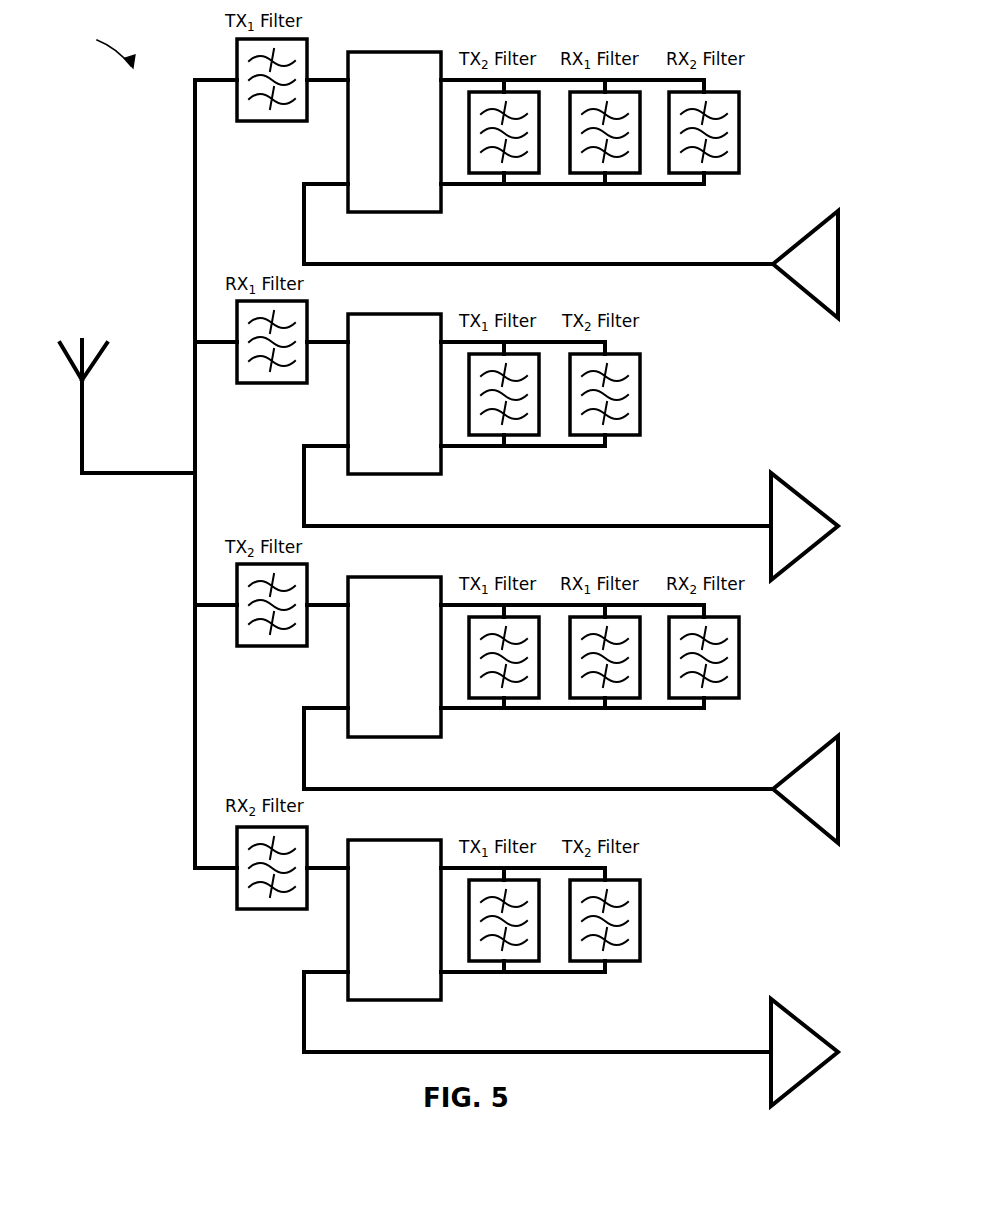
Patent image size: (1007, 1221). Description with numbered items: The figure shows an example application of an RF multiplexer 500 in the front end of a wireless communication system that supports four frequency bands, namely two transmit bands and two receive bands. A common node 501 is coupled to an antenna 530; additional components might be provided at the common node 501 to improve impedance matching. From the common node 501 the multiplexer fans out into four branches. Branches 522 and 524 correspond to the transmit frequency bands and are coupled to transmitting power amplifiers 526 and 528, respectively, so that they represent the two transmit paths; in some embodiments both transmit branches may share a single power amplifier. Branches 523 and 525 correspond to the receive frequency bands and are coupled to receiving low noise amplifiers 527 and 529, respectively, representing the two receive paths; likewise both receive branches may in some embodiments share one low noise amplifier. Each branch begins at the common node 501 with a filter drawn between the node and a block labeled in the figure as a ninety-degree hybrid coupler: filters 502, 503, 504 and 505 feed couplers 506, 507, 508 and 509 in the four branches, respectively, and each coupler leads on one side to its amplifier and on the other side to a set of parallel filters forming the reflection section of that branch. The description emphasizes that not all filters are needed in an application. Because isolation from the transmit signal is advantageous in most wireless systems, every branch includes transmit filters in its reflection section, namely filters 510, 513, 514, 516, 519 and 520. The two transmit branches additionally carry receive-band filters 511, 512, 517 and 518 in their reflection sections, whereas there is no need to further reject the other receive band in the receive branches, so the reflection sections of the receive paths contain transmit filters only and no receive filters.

The RF multiplexer 500 is at (92, 39).
The common node 501 is at (137, 478).
The TX1 filter 502 is at (258, 122).
The RX1 filter 503 is at (258, 384).
The TX2 filter 504 is at (258, 647).
The RX2 filter 505 is at (258, 910).
The 90 degree hybrid coupler 506 is at (348, 138).
The 90 degree hybrid coupler 507 is at (348, 400).
The 90 degree hybrid coupler 508 is at (348, 663).
The 90 degree hybrid coupler 509 is at (348, 926).
The transmit filter 510 is at (520, 175).
The RX1 filter 511 is at (621, 175).
The RX2 filter 512 is at (720, 175).
The transmit filter 513 is at (520, 437).
The transmit filter 514 is at (621, 437).
The transmit filter 516 is at (520, 700).
The RX1 filter 517 is at (621, 700).
The RX2 filter 518 is at (720, 700).
The transmit filter 519 is at (520, 963).
The transmit filter 520 is at (621, 963).
The branch 522 is at (722, 268).
The branch 523 is at (705, 522).
The branch 524 is at (722, 793).
The branch 525 is at (705, 1048).
The transmitting power amplifier 526 is at (806, 226).
The receiving low noise amplifier 527 is at (800, 490).
The transmitting power amplifier 528 is at (806, 751).
The receiving low noise amplifier 529 is at (800, 1015).
The antenna 530 is at (100, 340).